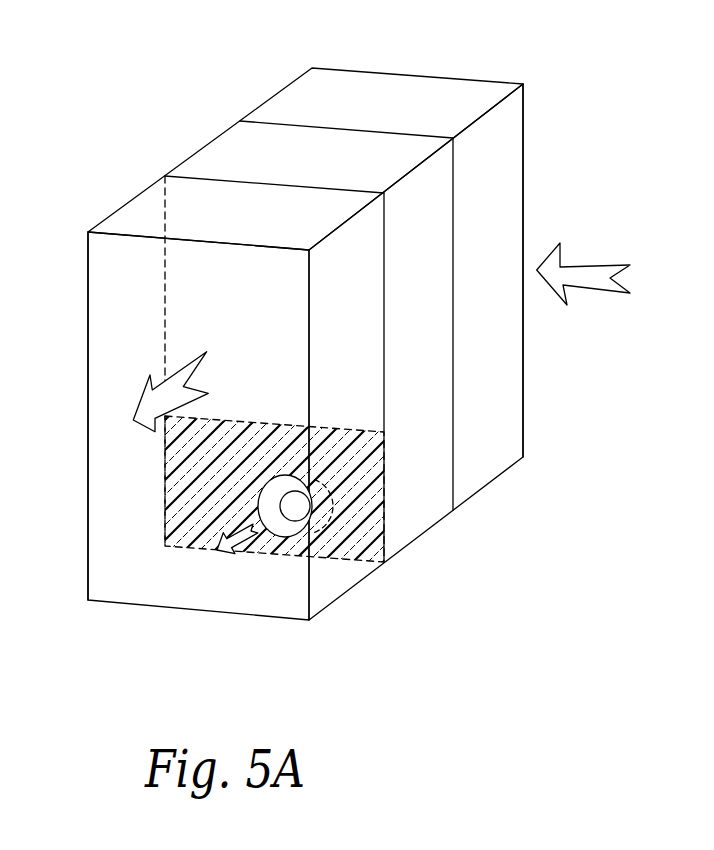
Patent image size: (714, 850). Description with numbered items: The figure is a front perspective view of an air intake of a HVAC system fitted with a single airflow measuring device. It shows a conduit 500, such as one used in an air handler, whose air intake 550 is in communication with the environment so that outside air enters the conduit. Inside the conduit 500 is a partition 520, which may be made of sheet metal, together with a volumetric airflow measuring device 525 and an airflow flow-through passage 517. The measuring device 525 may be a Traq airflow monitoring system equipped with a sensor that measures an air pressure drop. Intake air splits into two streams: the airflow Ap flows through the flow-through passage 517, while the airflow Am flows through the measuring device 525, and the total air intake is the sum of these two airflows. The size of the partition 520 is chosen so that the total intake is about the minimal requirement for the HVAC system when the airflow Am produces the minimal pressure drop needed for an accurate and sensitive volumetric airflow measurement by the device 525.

The conduit 500 is at (481, 85).
The airflow flow-through passage 517 is at (213, 291).
The air intake 550 is at (425, 206).
The partition 520 is at (363, 507).
The volumetric airflow measuring device 525 is at (283, 507).
The airflow through the flow-through passage Ap is at (138, 400).
The airflow through the airflow measuring device Am is at (249, 553).